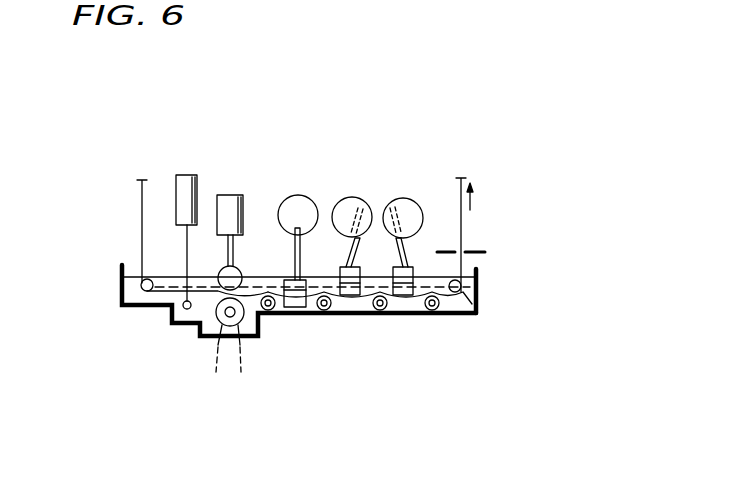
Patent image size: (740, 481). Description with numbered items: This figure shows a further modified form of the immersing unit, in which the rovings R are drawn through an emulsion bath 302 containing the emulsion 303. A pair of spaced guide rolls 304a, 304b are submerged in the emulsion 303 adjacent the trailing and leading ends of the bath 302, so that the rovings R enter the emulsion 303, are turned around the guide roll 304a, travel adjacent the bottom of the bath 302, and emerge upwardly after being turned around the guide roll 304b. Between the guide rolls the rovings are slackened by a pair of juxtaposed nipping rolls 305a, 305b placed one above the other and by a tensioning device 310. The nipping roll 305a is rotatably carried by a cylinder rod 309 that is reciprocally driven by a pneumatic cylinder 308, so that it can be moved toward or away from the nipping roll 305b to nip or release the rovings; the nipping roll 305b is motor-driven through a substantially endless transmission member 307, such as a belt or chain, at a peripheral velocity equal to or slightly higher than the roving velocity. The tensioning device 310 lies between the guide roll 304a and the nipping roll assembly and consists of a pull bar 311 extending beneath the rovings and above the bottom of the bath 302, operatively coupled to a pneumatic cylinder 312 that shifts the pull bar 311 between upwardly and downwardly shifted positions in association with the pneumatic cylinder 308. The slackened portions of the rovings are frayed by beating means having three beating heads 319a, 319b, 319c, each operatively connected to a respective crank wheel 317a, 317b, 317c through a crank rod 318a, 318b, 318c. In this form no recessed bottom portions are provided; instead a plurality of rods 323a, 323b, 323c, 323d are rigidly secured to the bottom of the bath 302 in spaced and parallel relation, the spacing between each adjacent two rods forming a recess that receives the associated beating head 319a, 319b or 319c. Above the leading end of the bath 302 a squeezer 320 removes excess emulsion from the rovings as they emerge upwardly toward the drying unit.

The rovings R is at (142, 207).
The emulsion bath 302 is at (478, 284).
The emulsion 303 is at (167, 277).
The guide roll 304a is at (142, 285).
The guide roll 304b is at (478, 313).
The nipping roll 305a is at (220, 273).
The nipping roll 305b is at (217, 315).
The endless transmission member 307 is at (217, 348).
The pneumatic cylinder 308 is at (223, 200).
The cylinder rod 309 is at (238, 268).
The tensioning device 310 is at (183, 168).
The pull bar 311 is at (170, 310).
The pneumatic cylinder 312 is at (142, 176).
The crank wheel 317a is at (300, 202).
The crank wheel 317b is at (347, 202).
The crank wheel 317c is at (412, 205).
The crank rod 318a is at (292, 242).
The crank rod 318b is at (366, 237).
The crank rod 318c is at (416, 242).
The beating head 319a is at (292, 310).
The beating head 319b is at (347, 298).
The beating head 319c is at (407, 298).
The squeezer 320 is at (477, 240).
The rod 323a is at (267, 313).
The rod 323b is at (322, 313).
The rod 323c is at (382, 313).
The rod 323d is at (437, 313).